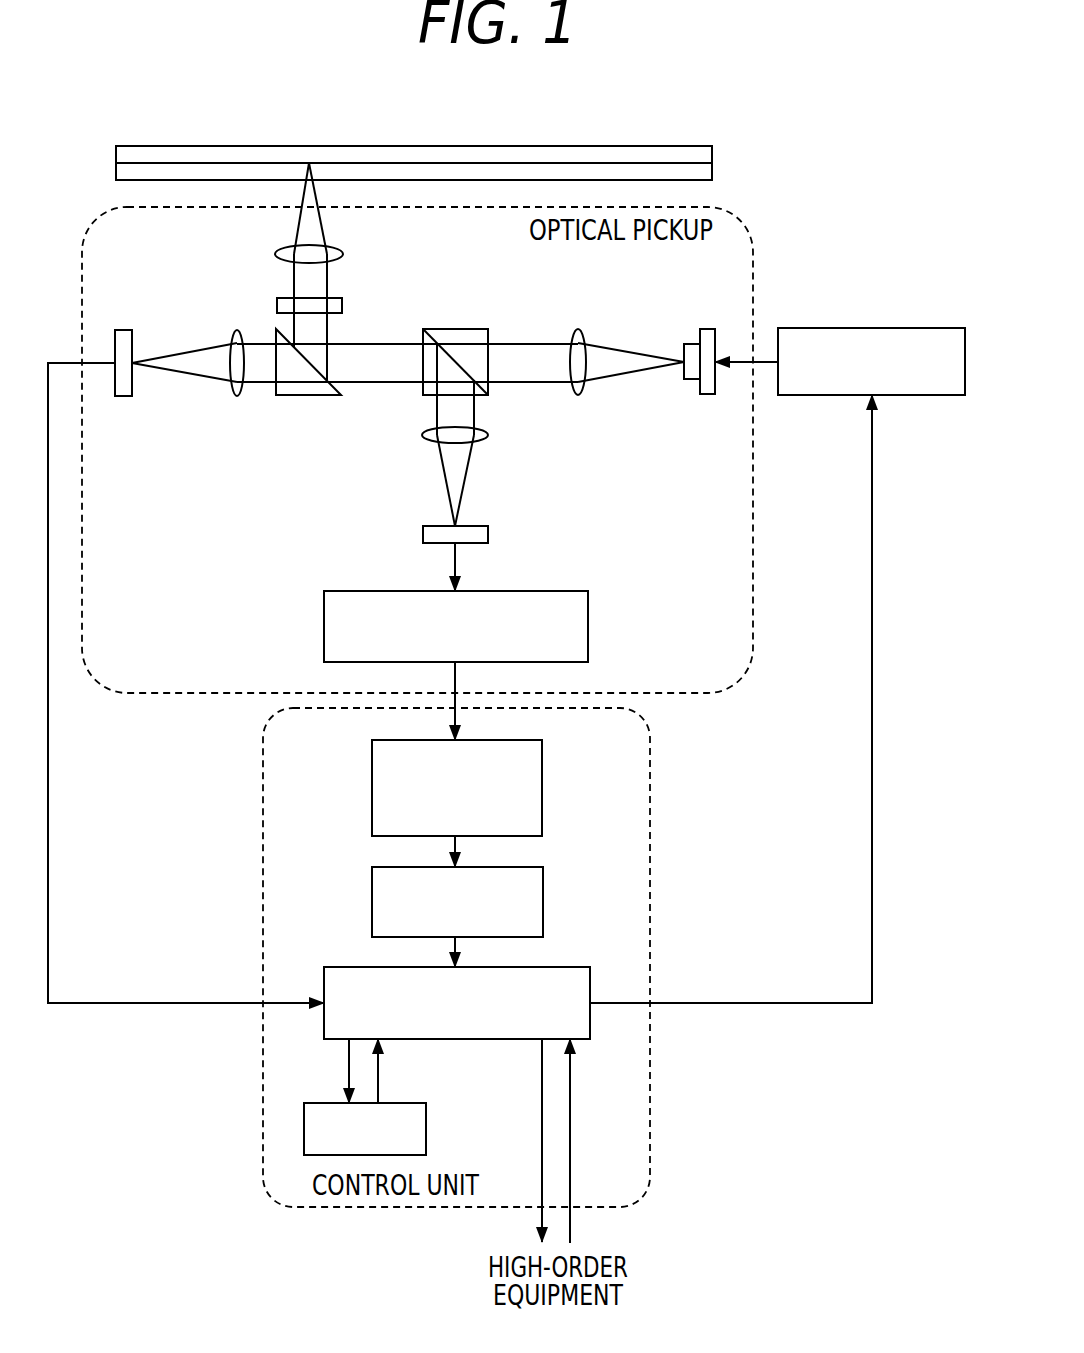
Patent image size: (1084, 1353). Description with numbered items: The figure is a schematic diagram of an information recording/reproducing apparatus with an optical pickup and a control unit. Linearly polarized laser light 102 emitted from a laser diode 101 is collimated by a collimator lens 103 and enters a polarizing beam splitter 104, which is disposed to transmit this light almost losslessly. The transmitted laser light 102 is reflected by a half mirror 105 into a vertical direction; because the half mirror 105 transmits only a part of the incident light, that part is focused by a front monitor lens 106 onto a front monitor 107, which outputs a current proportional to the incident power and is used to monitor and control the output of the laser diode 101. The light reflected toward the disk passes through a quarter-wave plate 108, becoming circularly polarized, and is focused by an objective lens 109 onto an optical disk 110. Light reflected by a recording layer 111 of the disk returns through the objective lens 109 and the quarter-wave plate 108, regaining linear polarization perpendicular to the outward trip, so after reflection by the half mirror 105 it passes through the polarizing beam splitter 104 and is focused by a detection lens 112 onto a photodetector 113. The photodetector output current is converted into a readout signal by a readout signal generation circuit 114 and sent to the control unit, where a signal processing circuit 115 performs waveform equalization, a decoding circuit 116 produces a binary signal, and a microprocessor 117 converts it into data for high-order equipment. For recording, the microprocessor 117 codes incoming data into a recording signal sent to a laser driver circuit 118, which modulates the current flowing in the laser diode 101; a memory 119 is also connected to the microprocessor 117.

The laser diode 101 is at (702, 396).
The laser light 102 is at (621, 377).
The collimator lens 103 is at (583, 331).
The polarizing beam splitter 104 is at (468, 329).
The half mirror 105 is at (322, 397).
The front monitor lens 106 is at (238, 397).
The front monitor 107 is at (122, 397).
The quarter-wave plate 108 is at (344, 303).
The objective lens 109 is at (344, 252).
The optical disk 110 is at (713, 150).
The recording layer 111 is at (713, 174).
The detection lens 112 is at (490, 433).
The photodetector 113 is at (490, 530).
The readout signal generation circuit 114 is at (590, 613).
The signal processing circuit 115 is at (544, 763).
The decoding circuit 116 is at (544, 889).
The microprocessor 117 is at (562, 967).
The laser driver circuit 118 is at (887, 328).
The memory 119 is at (402, 1103).